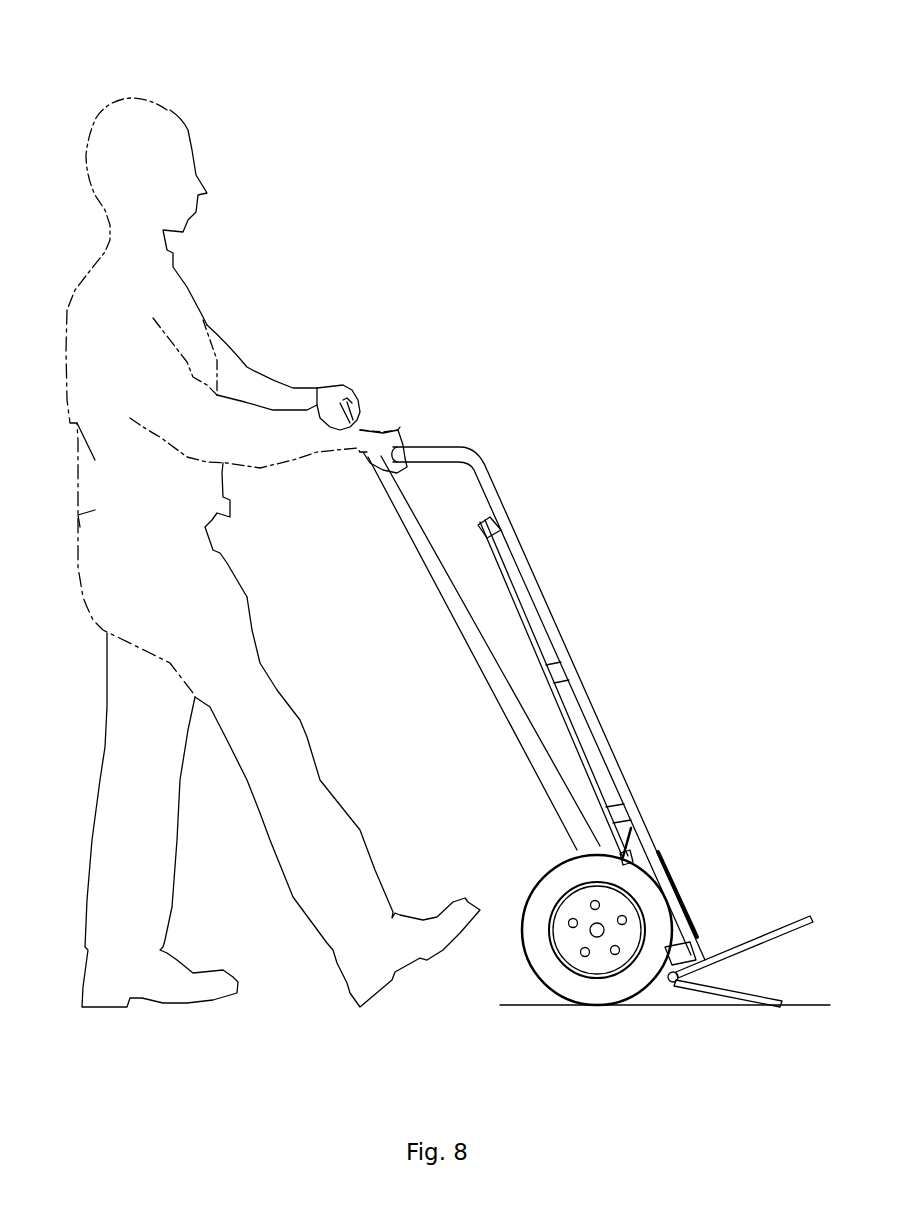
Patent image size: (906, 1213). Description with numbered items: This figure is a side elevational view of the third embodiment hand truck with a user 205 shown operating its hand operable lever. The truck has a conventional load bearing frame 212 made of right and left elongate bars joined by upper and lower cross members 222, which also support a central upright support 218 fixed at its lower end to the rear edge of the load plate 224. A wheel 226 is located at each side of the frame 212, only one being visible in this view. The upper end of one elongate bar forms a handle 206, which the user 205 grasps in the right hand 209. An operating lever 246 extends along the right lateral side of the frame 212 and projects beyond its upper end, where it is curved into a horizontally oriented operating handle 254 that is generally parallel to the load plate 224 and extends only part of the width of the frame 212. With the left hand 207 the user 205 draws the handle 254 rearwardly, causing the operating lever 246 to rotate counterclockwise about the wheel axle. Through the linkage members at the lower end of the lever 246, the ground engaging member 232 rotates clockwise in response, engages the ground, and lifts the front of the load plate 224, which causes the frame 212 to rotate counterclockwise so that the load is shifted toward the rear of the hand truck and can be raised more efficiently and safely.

The user 205 is at (167, 113).
The handle 206 is at (400, 427).
The left hand 207 is at (338, 385).
The right hand 209 is at (370, 455).
The operating handle 254 is at (358, 415).
The load bearing frame 212 is at (493, 497).
The operating lever 246 is at (430, 555).
The cross members 222 is at (500, 538).
The central upright support 218 is at (573, 730).
The wheel 226 is at (557, 977).
The load plate 224 is at (777, 930).
The ground engaging member 232 is at (745, 1000).